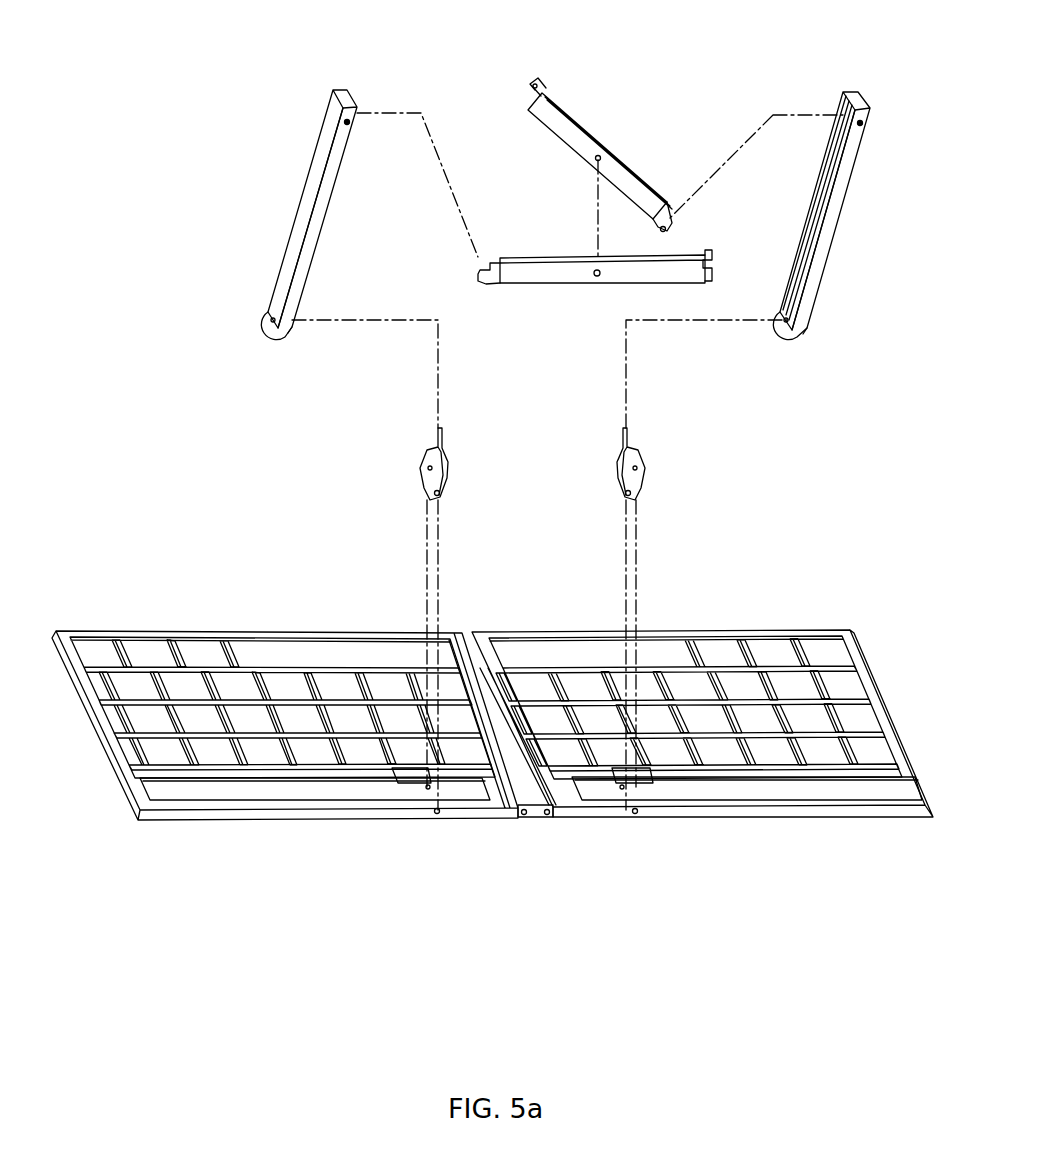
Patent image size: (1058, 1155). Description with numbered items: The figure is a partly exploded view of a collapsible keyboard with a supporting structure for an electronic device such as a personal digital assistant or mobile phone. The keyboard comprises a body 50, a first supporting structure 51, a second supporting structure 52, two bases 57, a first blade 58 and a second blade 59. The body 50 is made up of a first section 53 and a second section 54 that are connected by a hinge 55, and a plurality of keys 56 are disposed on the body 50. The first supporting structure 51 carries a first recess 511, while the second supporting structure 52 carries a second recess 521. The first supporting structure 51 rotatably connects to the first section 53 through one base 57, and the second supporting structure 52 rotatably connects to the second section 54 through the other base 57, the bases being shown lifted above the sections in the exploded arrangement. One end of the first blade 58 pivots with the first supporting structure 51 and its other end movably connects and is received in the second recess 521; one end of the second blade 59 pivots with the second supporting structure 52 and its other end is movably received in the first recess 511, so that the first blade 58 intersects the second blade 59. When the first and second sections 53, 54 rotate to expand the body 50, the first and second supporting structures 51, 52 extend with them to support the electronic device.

The body 50 is at (492, 812).
The first supporting structure 51 is at (286, 215).
The first recess 511 is at (296, 229).
The second supporting structure 52 is at (835, 216).
The second recess 521 is at (822, 200).
The first section 53 is at (285, 778).
The second section 54 is at (648, 818).
The hinge 55 is at (531, 865).
The keys 56 is at (311, 753).
The base 57 is at (426, 453).
The first blade 58 is at (514, 257).
The second blade 59 is at (584, 135).